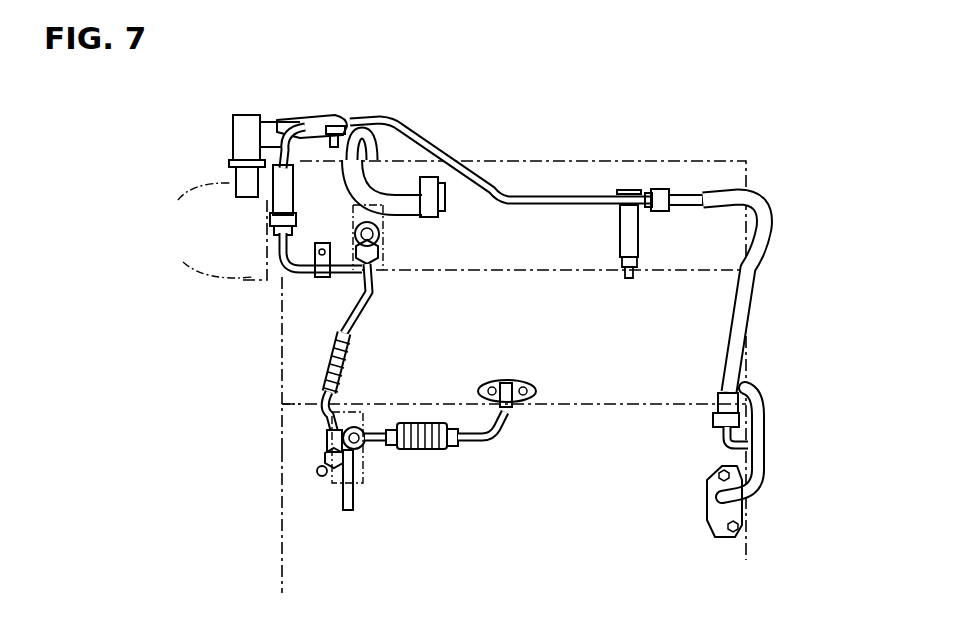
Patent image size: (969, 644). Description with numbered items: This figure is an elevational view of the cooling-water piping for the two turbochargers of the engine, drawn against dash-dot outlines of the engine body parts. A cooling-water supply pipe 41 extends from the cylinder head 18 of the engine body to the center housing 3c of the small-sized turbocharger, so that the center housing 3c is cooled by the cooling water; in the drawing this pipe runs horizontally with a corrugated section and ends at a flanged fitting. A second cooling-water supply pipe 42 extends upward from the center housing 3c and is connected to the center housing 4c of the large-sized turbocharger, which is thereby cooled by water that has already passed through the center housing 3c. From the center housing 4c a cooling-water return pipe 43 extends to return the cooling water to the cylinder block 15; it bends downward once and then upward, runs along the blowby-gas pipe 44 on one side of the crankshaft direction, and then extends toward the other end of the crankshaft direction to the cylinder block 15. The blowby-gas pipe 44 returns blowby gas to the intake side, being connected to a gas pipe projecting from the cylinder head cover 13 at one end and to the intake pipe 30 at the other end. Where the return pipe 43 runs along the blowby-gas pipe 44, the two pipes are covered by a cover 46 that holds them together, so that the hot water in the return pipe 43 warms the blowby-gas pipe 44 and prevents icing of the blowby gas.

The cylinder head cover 13 is at (717, 160).
The cylinder block 15 is at (282, 528).
The cylinder head 18 is at (282, 358).
The intake pipe 30 is at (187, 268).
The center housing 3c is at (363, 477).
The cooling-water supply pipe 41 is at (497, 441).
The cooling-water supply pipe 42 is at (357, 320).
The cooling-water return pipe 43 is at (405, 152).
The blowby-gas pipe 44 is at (385, 117).
The cover 46 is at (313, 116).
The center housing 4c is at (387, 225).